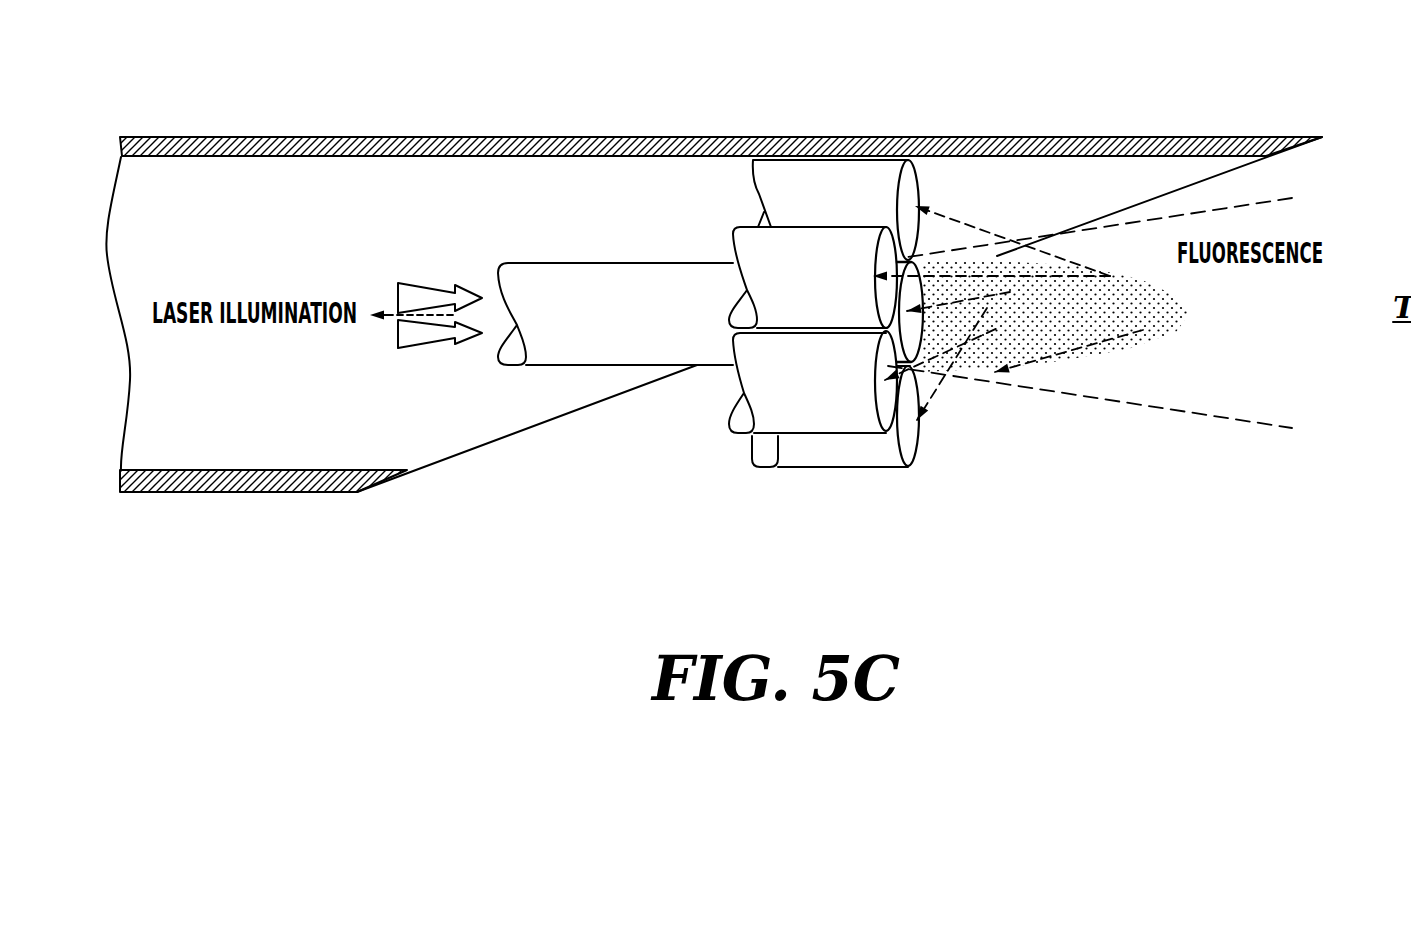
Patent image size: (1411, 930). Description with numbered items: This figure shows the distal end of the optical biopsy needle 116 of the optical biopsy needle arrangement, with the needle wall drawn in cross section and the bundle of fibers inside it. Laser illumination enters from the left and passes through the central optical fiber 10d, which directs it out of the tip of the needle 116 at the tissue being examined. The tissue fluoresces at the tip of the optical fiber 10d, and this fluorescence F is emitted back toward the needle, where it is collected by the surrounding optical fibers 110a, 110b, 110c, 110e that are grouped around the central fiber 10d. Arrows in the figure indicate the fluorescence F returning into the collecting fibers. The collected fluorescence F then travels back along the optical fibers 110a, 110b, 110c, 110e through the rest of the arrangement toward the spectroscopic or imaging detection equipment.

The needle 116 is at (423, 152).
The optical fiber 110a is at (770, 176).
The optical fiber 110b is at (745, 247).
The optical fiber 110c is at (740, 423).
The optical fiber 110e is at (770, 455).
The optical fiber 10d is at (913, 332).
The fluorescence F is at (742, 213).